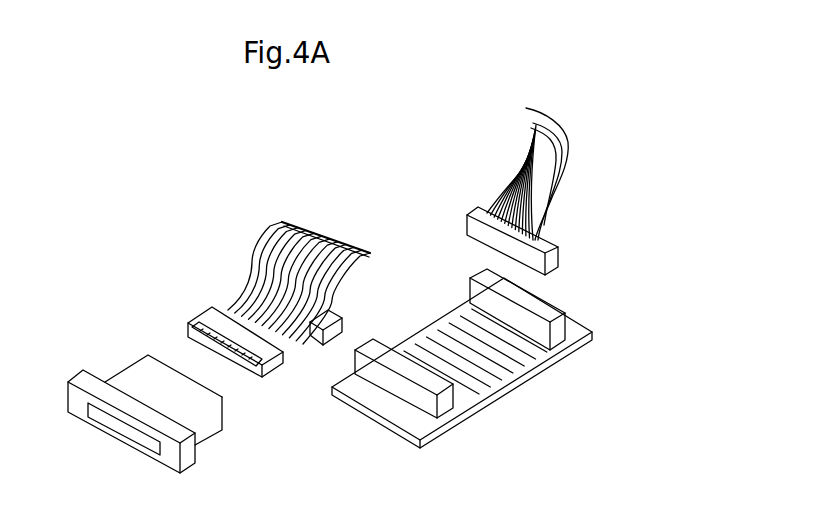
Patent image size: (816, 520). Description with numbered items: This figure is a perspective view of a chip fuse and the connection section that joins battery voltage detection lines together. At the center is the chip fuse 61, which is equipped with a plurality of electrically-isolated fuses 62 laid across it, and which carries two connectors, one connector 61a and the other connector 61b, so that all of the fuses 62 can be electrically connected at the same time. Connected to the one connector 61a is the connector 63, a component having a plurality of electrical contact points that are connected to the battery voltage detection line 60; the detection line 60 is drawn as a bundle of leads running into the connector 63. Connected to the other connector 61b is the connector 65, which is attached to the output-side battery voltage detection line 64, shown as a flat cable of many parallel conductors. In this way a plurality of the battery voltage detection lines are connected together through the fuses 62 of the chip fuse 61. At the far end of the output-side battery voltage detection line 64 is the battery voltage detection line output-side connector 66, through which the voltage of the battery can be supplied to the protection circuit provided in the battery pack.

The battery voltage detection line 60 is at (512, 173).
The chip fuse 61 is at (530, 383).
The connector 61a is at (553, 308).
The connector 61b is at (412, 398).
The fuses 62 is at (452, 322).
The connector 63 is at (558, 253).
The output-side battery voltage detection line 64 is at (268, 237).
The connector 65 is at (318, 333).
The battery voltage detection line output-side connector 66 is at (187, 310).